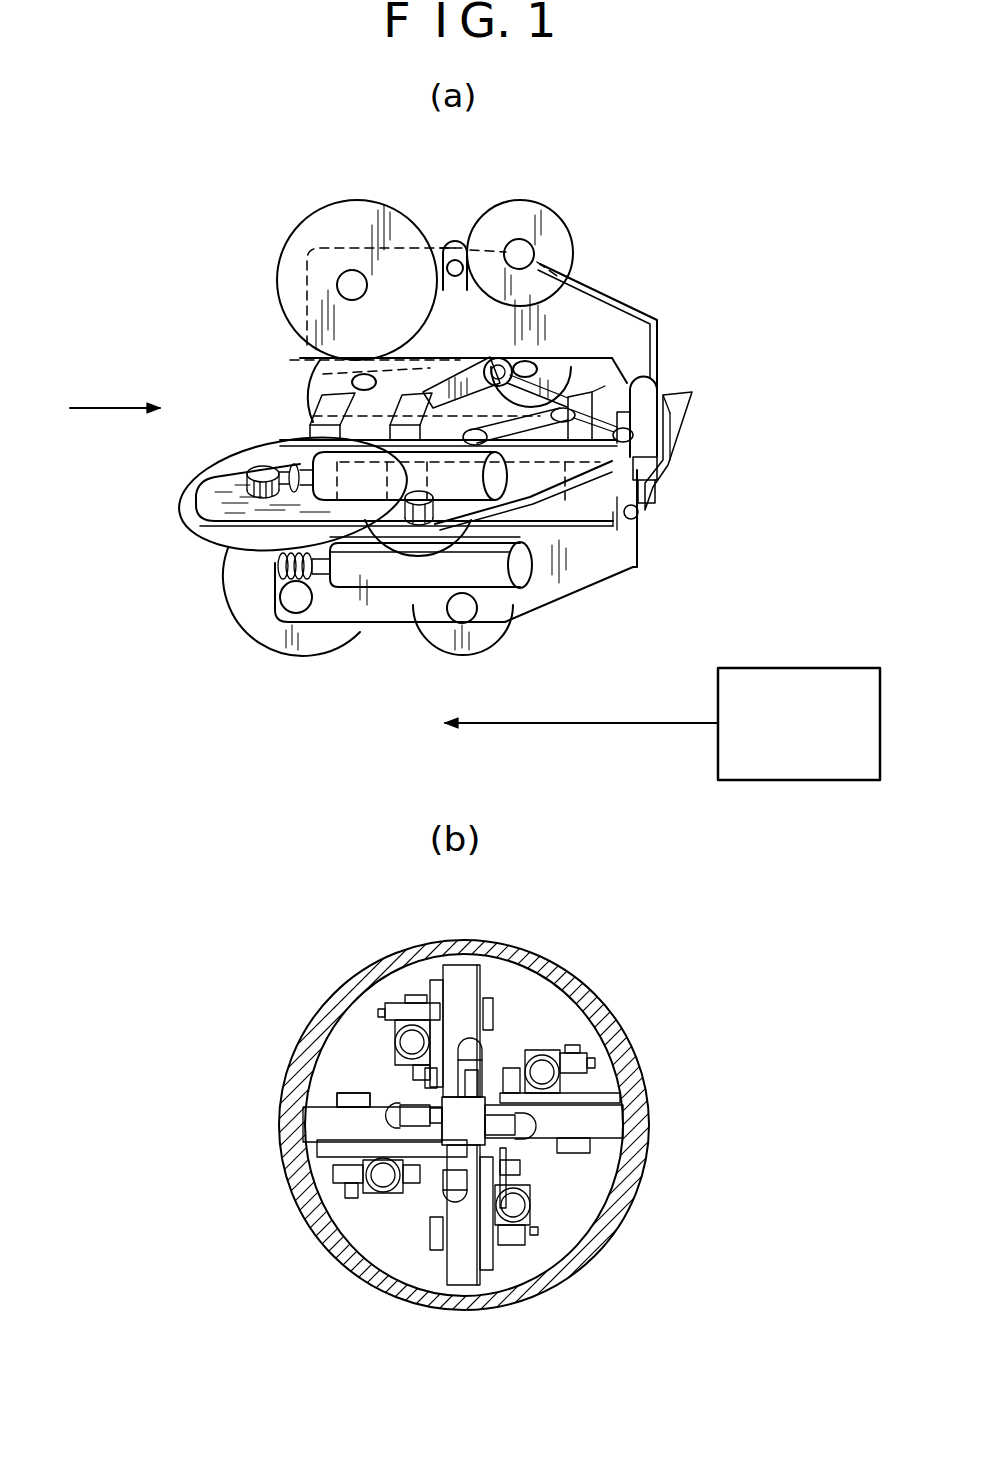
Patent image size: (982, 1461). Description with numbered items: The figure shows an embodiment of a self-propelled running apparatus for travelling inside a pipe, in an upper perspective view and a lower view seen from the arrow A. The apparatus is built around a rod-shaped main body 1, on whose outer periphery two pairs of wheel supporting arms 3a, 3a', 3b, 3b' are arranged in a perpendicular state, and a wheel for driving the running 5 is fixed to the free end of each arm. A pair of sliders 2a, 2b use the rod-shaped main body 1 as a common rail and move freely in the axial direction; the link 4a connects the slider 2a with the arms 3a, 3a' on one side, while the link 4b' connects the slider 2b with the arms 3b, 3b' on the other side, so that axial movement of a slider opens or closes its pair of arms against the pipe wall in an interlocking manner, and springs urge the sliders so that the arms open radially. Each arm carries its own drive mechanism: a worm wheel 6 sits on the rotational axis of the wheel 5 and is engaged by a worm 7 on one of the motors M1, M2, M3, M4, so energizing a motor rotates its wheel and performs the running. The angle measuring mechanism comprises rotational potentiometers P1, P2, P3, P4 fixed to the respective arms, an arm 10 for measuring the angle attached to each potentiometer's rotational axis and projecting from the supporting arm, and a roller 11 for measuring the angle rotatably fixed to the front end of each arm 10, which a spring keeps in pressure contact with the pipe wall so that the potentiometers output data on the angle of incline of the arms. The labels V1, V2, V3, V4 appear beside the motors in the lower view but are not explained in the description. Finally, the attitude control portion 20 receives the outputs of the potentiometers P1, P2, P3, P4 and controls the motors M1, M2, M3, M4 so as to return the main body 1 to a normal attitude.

The main body of the running apparatus 1 is at (603, 417).
The slider 2a is at (340, 410).
The slider 2b is at (540, 440).
The wheel supporting arm 3a is at (623, 308).
The wheel supporting arm 3a' is at (507, 546).
The wheel supporting arm 3b is at (704, 430).
The wheel supporting arm 3b' is at (523, 558).
The link 4a is at (482, 360).
The link 4b' is at (581, 512).
The wheel for driving the running 5 is at (313, 235).
The worm wheel 6 is at (240, 490).
The worm 7 is at (250, 478).
The arm for measuring an angle 10 is at (418, 542).
The roller for measuring an angle 11 is at (562, 240).
The attitude control portion 20 is at (815, 668).
The arrow A is at (115, 394).
The motor M1 is at (450, 999).
The motor M2 is at (523, 572).
The motor M3 is at (327, 1117).
The motor M4 is at (325, 462).
The valve V1 is at (472, 999).
The valve V2 is at (490, 1260).
The valve V3 is at (326, 1125).
The valve V4 is at (609, 1105).
The rotational potentiometer P1 is at (455, 240).
The rotational potentiometer P2 is at (470, 614).
The rotational potentiometer P3 is at (353, 1085).
The rotational potentiometer P4 is at (392, 545).